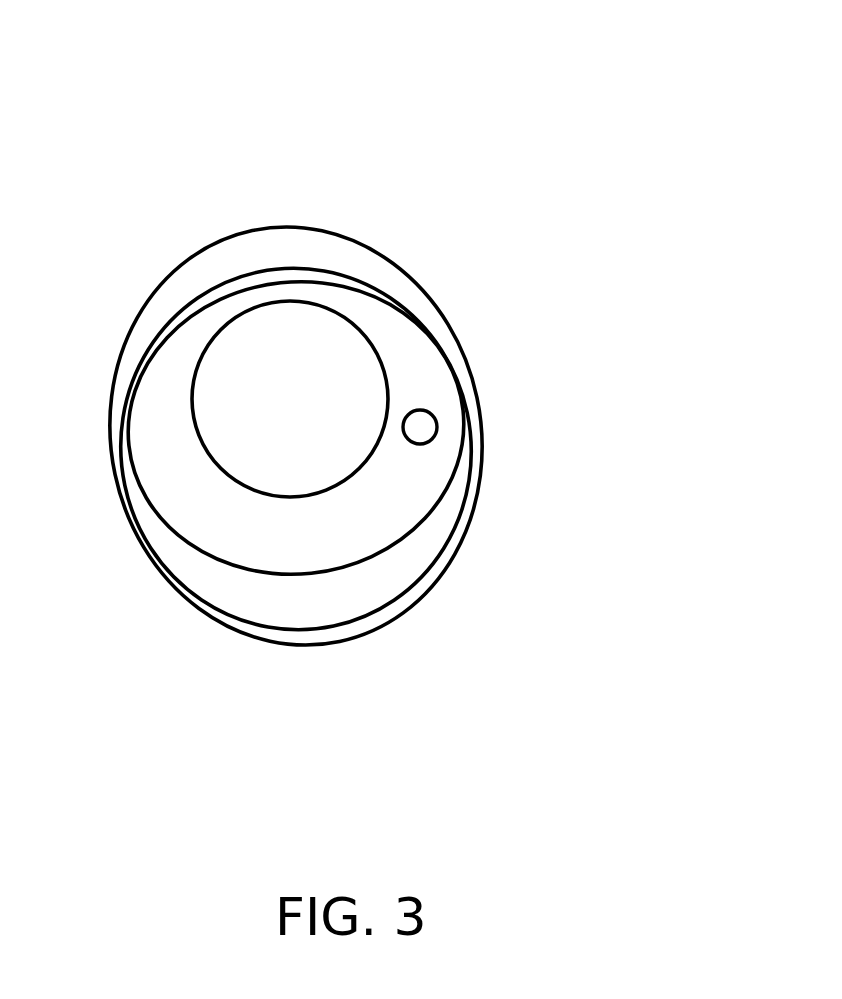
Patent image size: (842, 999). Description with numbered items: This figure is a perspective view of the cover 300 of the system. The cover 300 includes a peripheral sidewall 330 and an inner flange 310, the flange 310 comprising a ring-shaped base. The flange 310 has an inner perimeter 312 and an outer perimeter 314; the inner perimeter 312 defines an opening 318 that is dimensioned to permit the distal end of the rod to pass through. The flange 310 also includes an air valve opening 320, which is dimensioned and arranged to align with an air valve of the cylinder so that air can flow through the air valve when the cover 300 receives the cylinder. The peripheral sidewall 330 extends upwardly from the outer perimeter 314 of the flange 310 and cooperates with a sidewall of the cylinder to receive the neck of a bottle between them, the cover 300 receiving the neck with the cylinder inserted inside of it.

The cover 300 is at (373, 165).
The inner flange 310 is at (413, 485).
The inner perimeter 312 is at (318, 302).
The outer perimeter 314 is at (425, 292).
The opening 318 is at (247, 417).
The air valve opening 320 is at (421, 411).
The peripheral sidewall 330 is at (240, 628).